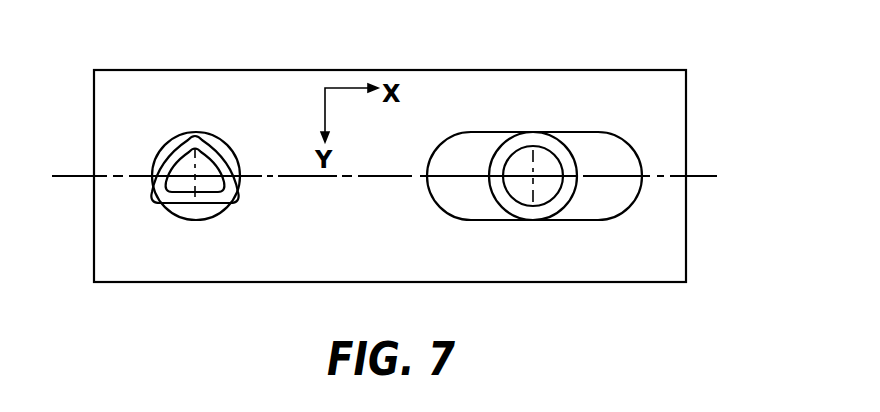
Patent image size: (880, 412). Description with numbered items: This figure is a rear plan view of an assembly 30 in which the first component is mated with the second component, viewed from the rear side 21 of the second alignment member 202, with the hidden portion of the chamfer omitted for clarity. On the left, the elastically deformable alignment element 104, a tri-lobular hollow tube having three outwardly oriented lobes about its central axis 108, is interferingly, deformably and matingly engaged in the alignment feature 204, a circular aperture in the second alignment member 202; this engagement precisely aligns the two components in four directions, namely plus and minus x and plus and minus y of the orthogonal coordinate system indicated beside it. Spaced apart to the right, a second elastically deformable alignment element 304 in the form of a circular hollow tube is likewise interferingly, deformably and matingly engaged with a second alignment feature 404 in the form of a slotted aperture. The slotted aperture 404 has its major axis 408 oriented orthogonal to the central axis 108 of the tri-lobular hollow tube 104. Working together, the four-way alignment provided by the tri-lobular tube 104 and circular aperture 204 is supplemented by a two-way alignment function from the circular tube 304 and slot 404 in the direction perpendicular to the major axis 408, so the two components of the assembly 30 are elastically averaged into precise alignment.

The assembly 30 is at (693, 98).
The rear side of second alignment member 21 is at (656, 111).
The second alignment member 202 is at (598, 270).
The elastically deformable alignment element 104 is at (165, 163).
The alignment feature 204 is at (223, 137).
The central axis 108 is at (195, 178).
The second elastically deformable alignment element 304 is at (488, 163).
The second alignment feature 404 is at (512, 132).
The major axis 408 is at (667, 176).